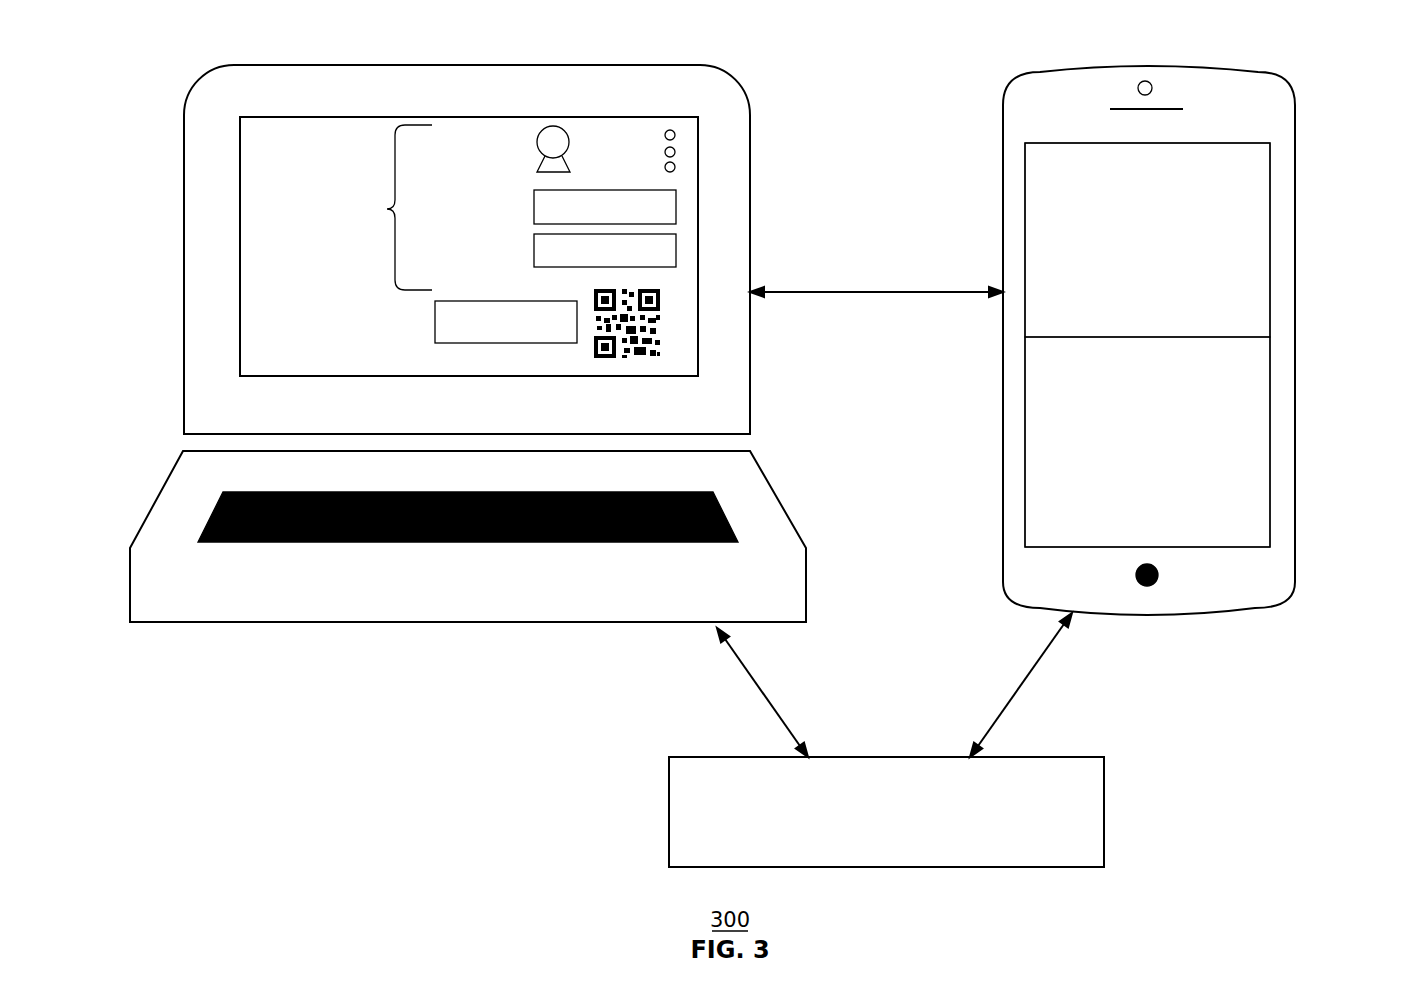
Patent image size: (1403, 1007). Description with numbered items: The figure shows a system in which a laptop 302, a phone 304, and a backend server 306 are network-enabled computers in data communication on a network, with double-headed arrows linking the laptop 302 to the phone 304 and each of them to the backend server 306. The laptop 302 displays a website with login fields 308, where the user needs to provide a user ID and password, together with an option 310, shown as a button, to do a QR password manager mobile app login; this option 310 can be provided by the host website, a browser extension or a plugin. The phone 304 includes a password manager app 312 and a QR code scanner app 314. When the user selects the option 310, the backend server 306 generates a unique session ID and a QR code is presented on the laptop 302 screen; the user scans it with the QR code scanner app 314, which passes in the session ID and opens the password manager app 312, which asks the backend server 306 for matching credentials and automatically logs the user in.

The laptop 302 is at (178, 102).
The phone 304 is at (993, 99).
The backend server 306 is at (653, 806).
The login fields 308 is at (368, 213).
The option 310 is at (433, 337).
The password manager app 312 is at (1300, 218).
The QR code scanner app 314 is at (1300, 408).